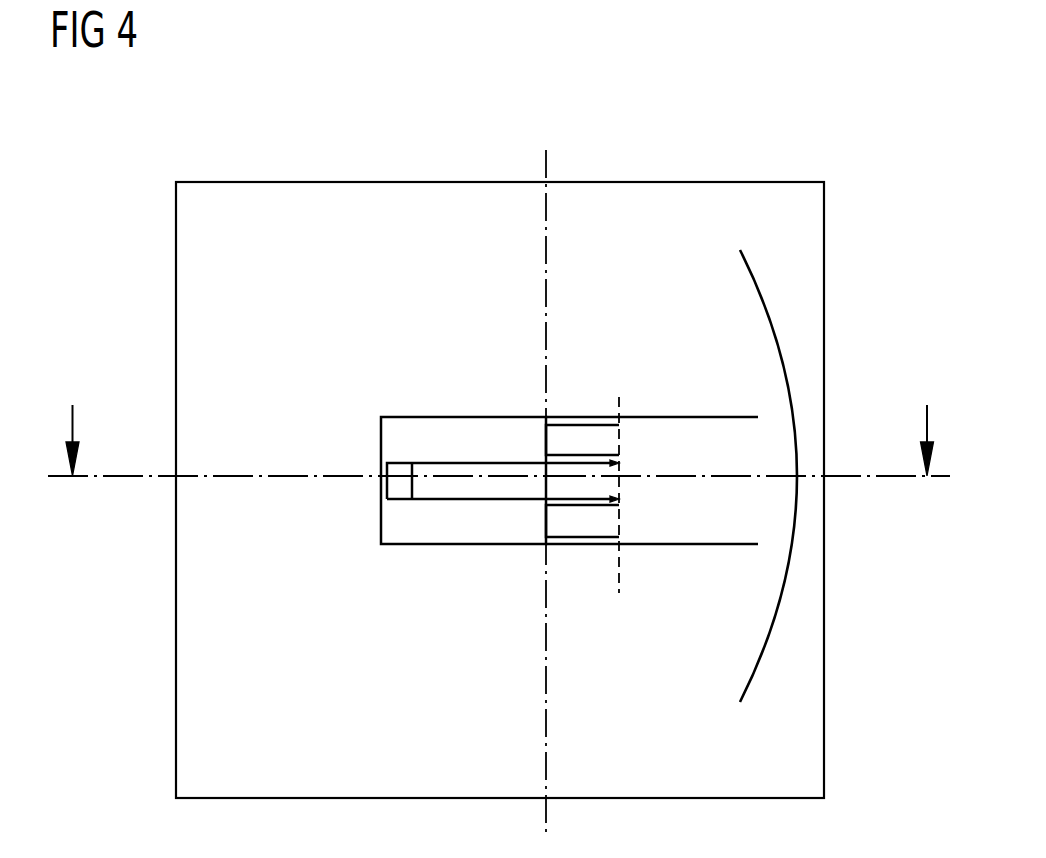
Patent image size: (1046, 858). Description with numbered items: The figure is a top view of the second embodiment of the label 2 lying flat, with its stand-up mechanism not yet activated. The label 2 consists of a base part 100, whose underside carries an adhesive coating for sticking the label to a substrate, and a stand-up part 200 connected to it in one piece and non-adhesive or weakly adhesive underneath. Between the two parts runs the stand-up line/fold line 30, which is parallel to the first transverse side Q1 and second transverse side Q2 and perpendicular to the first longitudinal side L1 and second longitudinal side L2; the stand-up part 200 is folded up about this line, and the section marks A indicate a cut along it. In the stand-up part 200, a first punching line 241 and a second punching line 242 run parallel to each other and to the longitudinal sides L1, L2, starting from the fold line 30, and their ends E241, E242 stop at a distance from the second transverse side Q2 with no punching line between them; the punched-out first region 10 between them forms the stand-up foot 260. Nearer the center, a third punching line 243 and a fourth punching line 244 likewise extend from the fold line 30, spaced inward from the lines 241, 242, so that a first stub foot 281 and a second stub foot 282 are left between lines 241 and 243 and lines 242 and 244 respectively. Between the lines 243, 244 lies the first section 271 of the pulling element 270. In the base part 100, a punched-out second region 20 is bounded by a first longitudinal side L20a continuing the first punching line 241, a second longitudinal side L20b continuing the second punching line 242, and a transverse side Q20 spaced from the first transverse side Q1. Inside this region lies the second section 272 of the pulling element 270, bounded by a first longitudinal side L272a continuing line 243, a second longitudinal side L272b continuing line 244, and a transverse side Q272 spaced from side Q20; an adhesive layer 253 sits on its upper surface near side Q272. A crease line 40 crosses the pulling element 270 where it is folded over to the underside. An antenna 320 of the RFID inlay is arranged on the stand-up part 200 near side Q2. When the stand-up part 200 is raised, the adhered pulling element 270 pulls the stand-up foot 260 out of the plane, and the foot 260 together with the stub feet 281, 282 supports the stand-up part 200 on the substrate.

The label 2 is at (820, 126).
The punched-out first region 10 is at (500, 490).
The base part 100 is at (335, 193).
The stand-up part 200 is at (697, 193).
The stand-up line/fold line 30 is at (548, 240).
The antenna 320 is at (771, 300).
The punched-out second region 20 is at (490, 428).
The pulling element 270 is at (432, 492).
The second section of the pulling element 272 is at (526, 492).
The adhesive layer 253 is at (395, 487).
The first section of the pulling element 271 is at (555, 487).
The first stub foot 281 is at (588, 435).
The second stub foot 282 is at (580, 528).
The first punching line 241 is at (677, 415).
The second punching line 242 is at (680, 546).
The third punching line 243 is at (622, 462).
The fourth punching line 244 is at (622, 500).
The end of the first punching line E241 is at (757, 416).
The end of the second punching line E242 is at (757, 547).
The stand-up foot 260 is at (670, 487).
The crease line 40 is at (620, 580).
The first longitudinal side L1 is at (500, 162).
The second longitudinal side L2 is at (499, 821).
The first transverse side Q1 is at (156, 457).
The second transverse side Q2 is at (845, 457).
The section line A- A is at (500, 440).
The first longitudinal side of the punched-out second region L20a is at (472, 402).
The second longitudinal side of the punched-out second region L20b is at (472, 564).
The first longitudinal side of the second section L272a is at (479, 449).
The second longitudinal side of the second section L272b is at (479, 521).
The transverse side of the punched-out second region Q20 is at (354, 522).
The transverse side of the second section Q272 is at (384, 470).